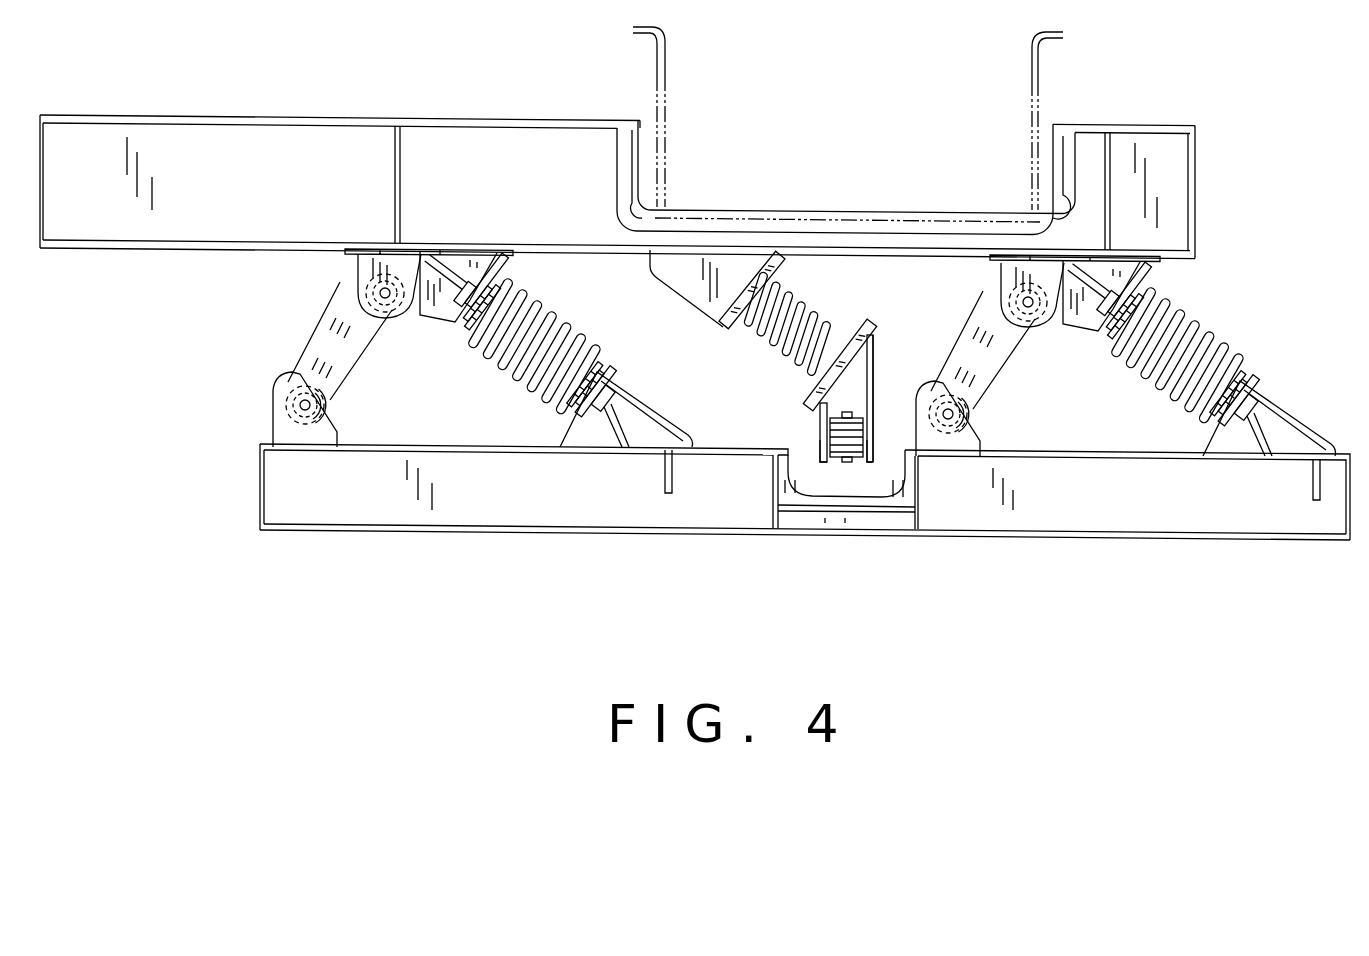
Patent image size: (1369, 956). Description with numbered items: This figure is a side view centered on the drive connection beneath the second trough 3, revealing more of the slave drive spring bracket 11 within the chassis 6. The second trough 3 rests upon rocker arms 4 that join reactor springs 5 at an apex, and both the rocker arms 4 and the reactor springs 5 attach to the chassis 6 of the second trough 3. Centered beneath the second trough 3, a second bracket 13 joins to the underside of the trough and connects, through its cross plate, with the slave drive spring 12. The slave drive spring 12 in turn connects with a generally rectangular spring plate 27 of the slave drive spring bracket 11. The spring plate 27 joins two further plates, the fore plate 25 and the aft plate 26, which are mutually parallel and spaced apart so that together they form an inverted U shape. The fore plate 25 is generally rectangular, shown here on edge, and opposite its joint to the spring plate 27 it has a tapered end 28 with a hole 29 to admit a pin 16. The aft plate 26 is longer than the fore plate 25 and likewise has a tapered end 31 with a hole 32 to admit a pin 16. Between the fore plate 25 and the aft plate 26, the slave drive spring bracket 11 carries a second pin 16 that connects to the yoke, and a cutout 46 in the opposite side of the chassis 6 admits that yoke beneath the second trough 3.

The second trough 3 is at (262, 115).
The rocker arms 4 is at (330, 330).
The reactor springs 5 is at (558, 322).
The chassis 6 is at (1275, 518).
The slave drive spring bracket 11 is at (855, 373).
The slave drive spring 12 is at (806, 270).
The second bracket 13 is at (716, 268).
The pin 16 is at (830, 432).
The fore plate 25 is at (815, 418).
The aft plate 26 is at (874, 378).
The spring plate 27 is at (858, 332).
The tapered end 28 is at (827, 463).
The hole 29 is at (819, 518).
The tapered end 31 is at (872, 462).
The hole 32 is at (877, 462).
The cutout 46 is at (847, 483).